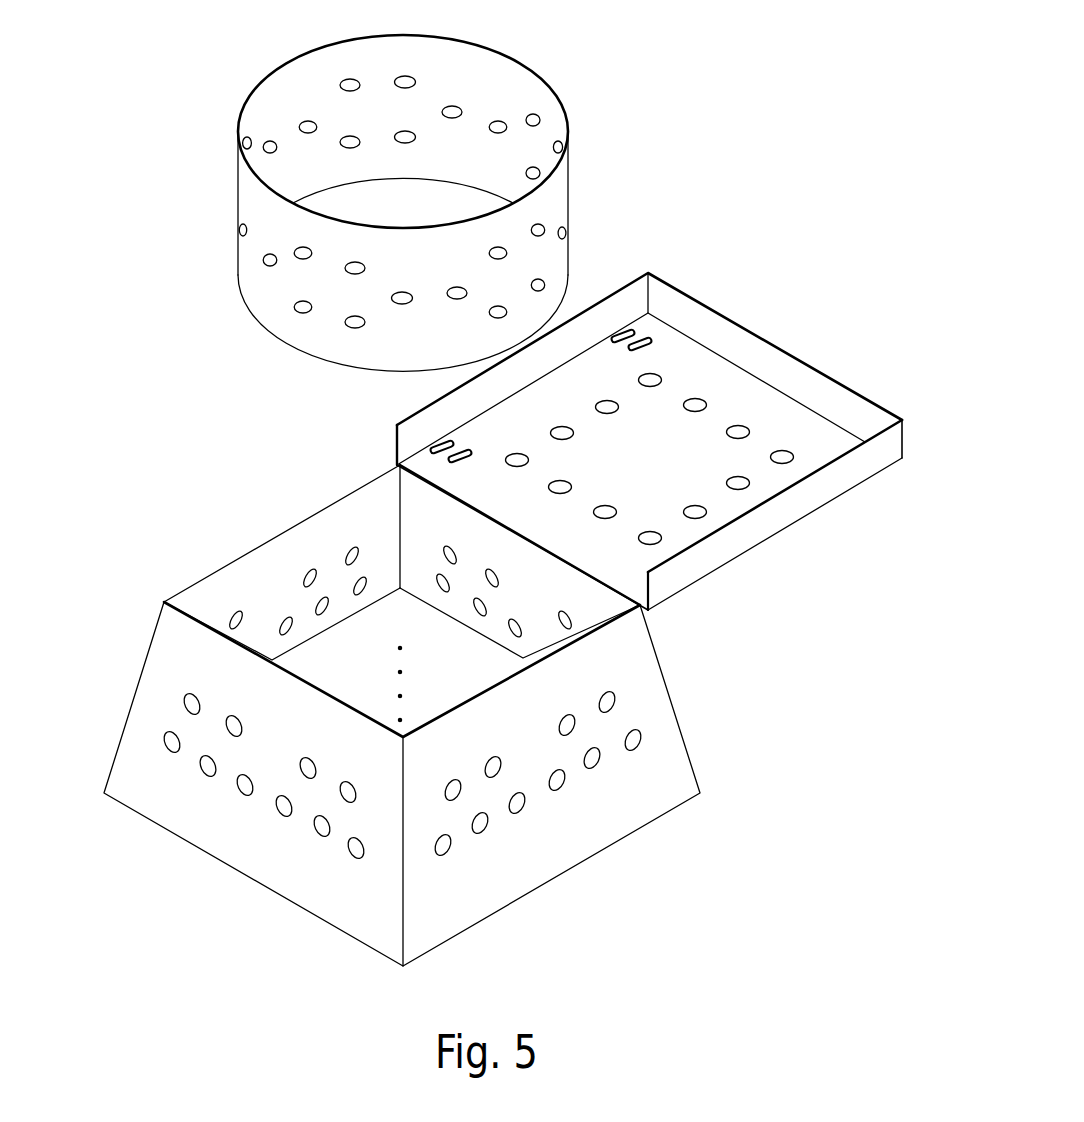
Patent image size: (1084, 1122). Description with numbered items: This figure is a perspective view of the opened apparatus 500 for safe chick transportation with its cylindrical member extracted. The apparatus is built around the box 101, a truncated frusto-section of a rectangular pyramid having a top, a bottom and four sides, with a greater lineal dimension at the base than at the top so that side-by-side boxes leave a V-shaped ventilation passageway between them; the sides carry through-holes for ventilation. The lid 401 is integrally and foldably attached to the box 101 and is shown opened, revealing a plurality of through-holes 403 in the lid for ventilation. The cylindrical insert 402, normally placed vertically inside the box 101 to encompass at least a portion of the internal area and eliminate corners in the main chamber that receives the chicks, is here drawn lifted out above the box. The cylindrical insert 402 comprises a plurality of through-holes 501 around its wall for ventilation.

The opened apparatus for safe chick transportation 500 is at (180, 92).
The rectangular pyramid box 101 is at (617, 803).
The lid 401 is at (679, 415).
The cylindrical insert 402 is at (565, 107).
The through-holes 403 is at (706, 403).
The through-holes 501 is at (346, 327).